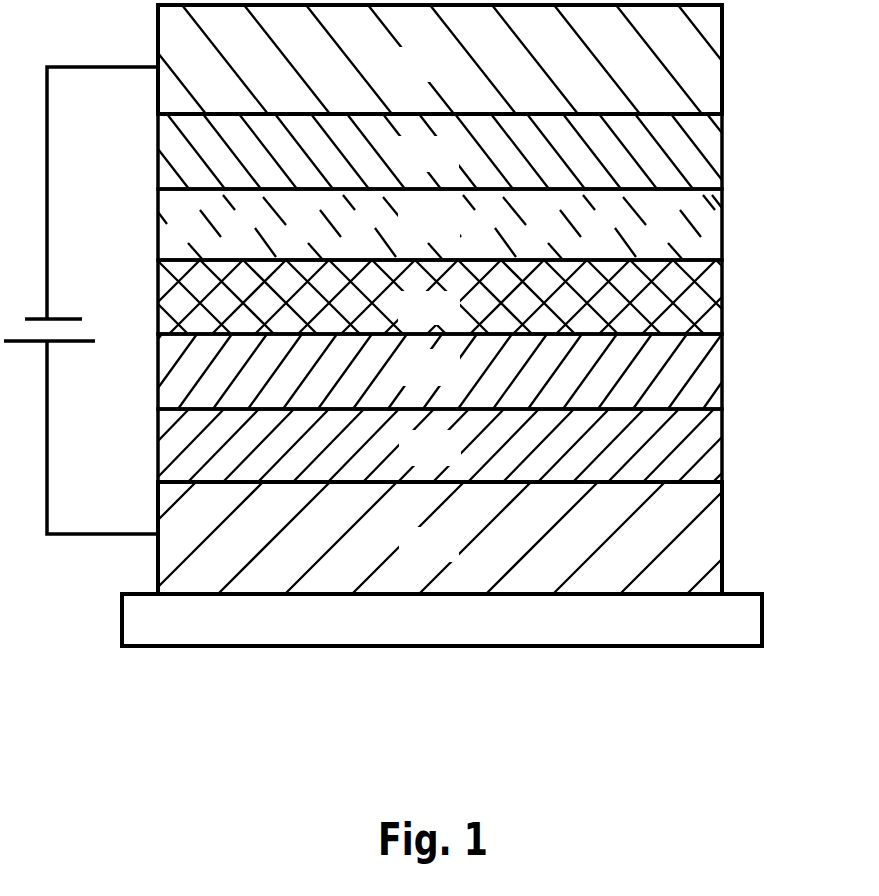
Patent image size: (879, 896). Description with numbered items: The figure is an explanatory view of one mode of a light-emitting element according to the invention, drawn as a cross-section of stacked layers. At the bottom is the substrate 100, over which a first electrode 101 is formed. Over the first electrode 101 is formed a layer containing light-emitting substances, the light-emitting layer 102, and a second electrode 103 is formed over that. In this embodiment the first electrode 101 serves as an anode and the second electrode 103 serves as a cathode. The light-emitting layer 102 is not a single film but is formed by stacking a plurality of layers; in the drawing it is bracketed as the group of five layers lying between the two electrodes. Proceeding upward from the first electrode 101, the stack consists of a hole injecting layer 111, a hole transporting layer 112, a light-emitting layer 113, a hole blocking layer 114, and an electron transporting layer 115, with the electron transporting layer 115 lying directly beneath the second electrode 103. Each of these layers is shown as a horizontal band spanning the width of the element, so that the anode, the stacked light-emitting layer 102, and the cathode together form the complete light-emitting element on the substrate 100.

The substrate 100 is at (456, 637).
The first electrode 101 is at (456, 558).
The light-emitting layer 102 is at (489, 298).
The second electrode 103 is at (453, 78).
The hole injecting layer 111 is at (456, 462).
The hole transporting layer 112 is at (455, 382).
The light-emitting layer 113 is at (454, 321).
The hole blocking layer 114 is at (454, 235).
The electron transporting layer 115 is at (453, 168).